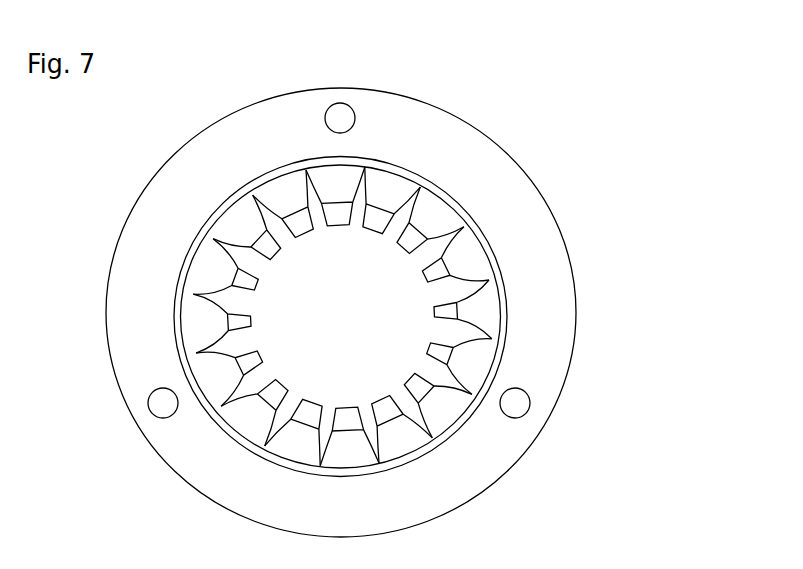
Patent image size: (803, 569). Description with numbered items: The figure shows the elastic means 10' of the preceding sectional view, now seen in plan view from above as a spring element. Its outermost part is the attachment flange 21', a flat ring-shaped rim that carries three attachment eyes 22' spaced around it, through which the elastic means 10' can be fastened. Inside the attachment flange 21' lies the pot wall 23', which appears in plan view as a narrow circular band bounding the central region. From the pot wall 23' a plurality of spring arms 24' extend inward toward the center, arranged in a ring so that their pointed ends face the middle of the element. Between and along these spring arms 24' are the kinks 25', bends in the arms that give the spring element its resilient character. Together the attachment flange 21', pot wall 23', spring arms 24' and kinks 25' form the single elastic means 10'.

The elastic means 10' is at (380, 278).
The attachment flange 21' is at (307, 312).
The attachment eyes 22' is at (352, 249).
The pot wall 23' is at (345, 266).
The spring arms 24' is at (413, 316).
The kinks 25' is at (418, 246).